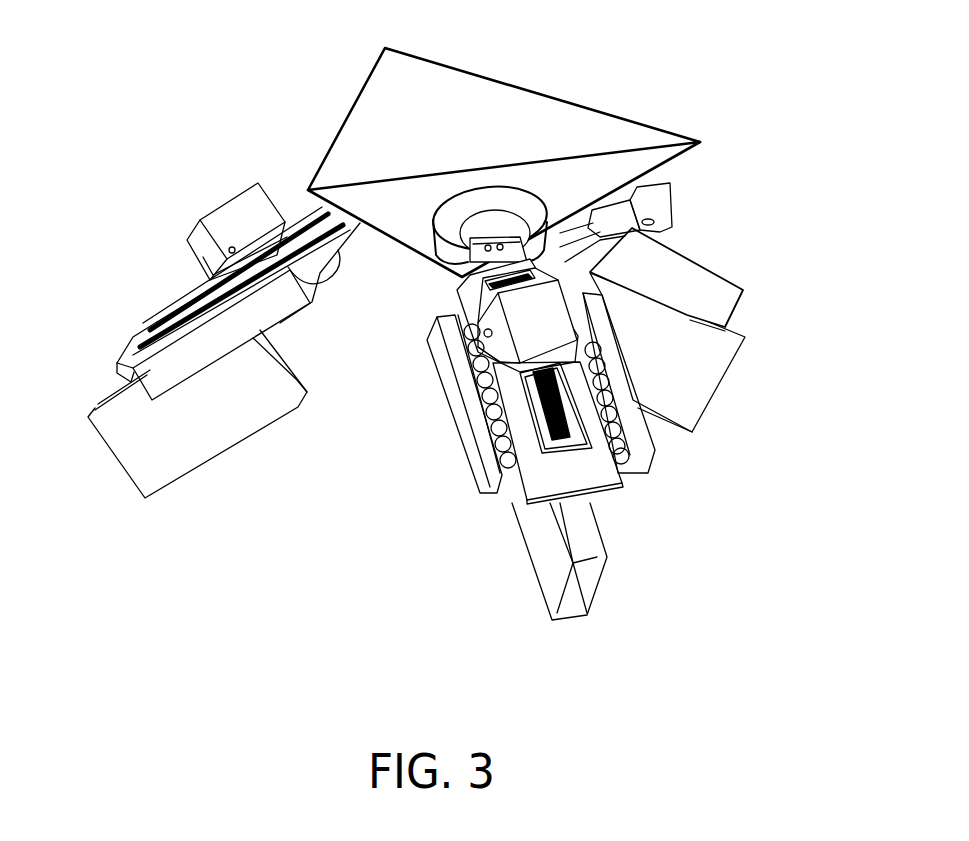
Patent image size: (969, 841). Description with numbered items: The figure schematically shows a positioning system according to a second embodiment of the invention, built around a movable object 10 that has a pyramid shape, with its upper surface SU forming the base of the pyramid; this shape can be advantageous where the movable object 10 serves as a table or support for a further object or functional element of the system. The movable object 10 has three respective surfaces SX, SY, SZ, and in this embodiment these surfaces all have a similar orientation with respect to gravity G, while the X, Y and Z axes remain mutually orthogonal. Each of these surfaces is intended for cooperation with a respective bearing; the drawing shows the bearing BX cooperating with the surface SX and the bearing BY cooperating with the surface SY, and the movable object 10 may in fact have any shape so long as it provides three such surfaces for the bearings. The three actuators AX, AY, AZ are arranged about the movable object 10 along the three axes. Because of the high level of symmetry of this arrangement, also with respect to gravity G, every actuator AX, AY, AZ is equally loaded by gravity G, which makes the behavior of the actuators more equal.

The movable object 10 is at (526, 100).
The upper surface SU is at (442, 114).
The surface SX is at (336, 124).
The surface SZ is at (633, 116).
The surface SY is at (604, 175).
The actuator AX is at (194, 316).
The actuator AY is at (501, 439).
The actuator AZ is at (718, 233).
The bearing BX is at (392, 252).
The bearing BY is at (455, 268).
The gravity G is at (455, 482).